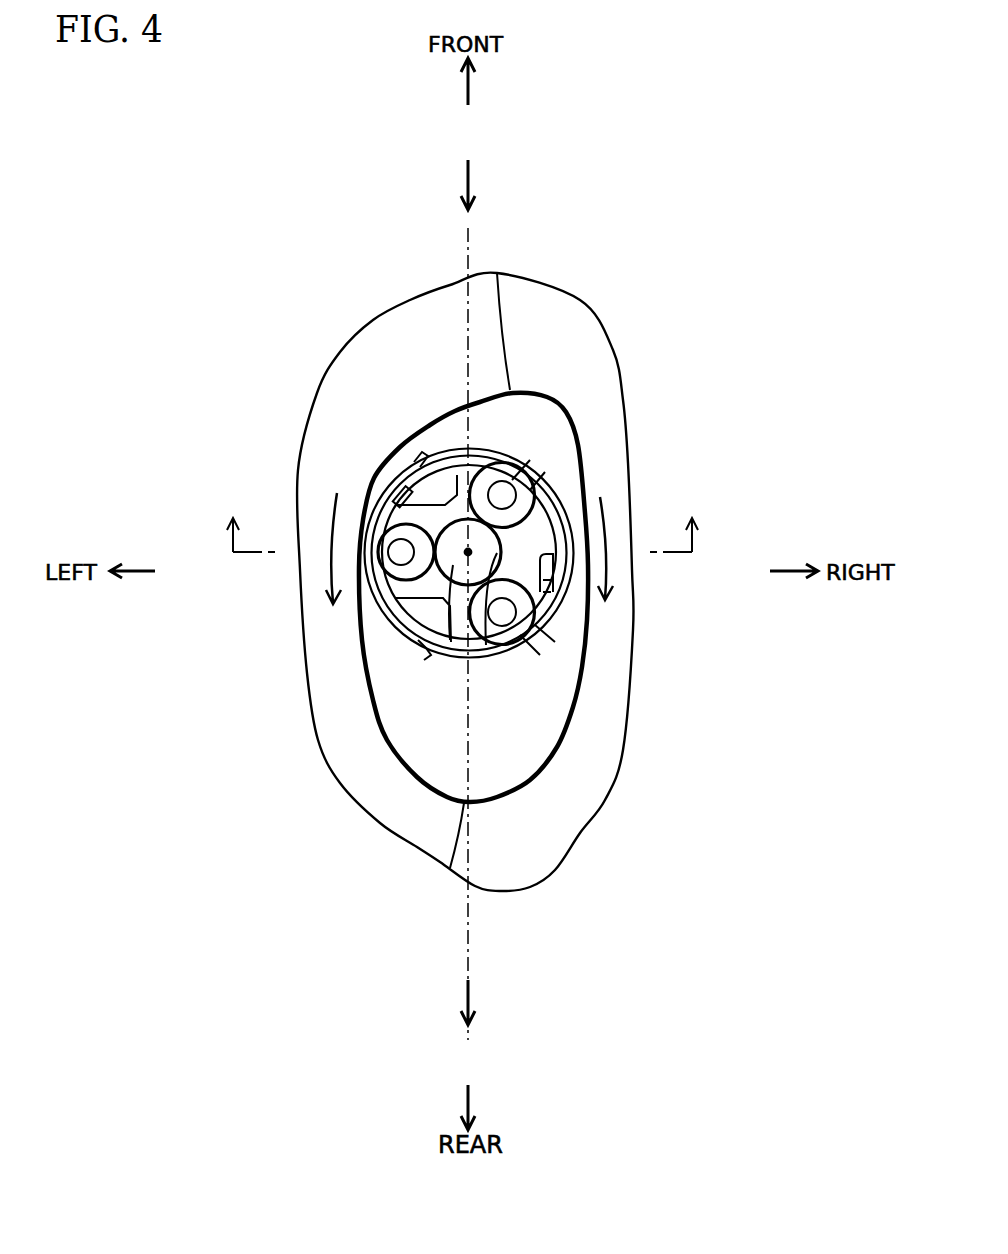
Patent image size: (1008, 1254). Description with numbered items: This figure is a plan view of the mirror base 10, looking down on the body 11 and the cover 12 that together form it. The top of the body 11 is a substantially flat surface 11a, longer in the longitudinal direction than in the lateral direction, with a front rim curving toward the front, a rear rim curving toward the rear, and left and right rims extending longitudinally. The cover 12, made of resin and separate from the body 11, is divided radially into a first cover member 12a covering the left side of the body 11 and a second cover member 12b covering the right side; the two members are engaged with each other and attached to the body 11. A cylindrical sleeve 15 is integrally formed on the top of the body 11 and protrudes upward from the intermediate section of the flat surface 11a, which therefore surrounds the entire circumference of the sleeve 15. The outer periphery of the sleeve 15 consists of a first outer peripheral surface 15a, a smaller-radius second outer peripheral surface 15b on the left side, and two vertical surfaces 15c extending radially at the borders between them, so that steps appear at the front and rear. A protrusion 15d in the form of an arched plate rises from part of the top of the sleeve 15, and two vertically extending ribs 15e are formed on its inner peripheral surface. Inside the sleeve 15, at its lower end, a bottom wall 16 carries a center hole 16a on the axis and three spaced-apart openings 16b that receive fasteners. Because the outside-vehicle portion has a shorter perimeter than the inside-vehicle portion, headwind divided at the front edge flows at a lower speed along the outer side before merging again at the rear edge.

The mirror base 10 is at (595, 256).
The body 11 is at (556, 731).
The flat surface 11a is at (415, 722).
The cover 12 is at (428, 944).
The first cover member 12a is at (388, 812).
The second cover member 12b is at (492, 865).
The sleeve 15 is at (533, 650).
The first outer peripheral surface 15a is at (560, 462).
The second outer peripheral surface 15b is at (385, 614).
The vertical surface 15c is at (421, 455).
The protrusion 15d is at (560, 590).
The rib 15e is at (438, 500).
The bottom wall 16 is at (537, 525).
The center hole 16a is at (486, 640).
The opening 16b is at (398, 545).